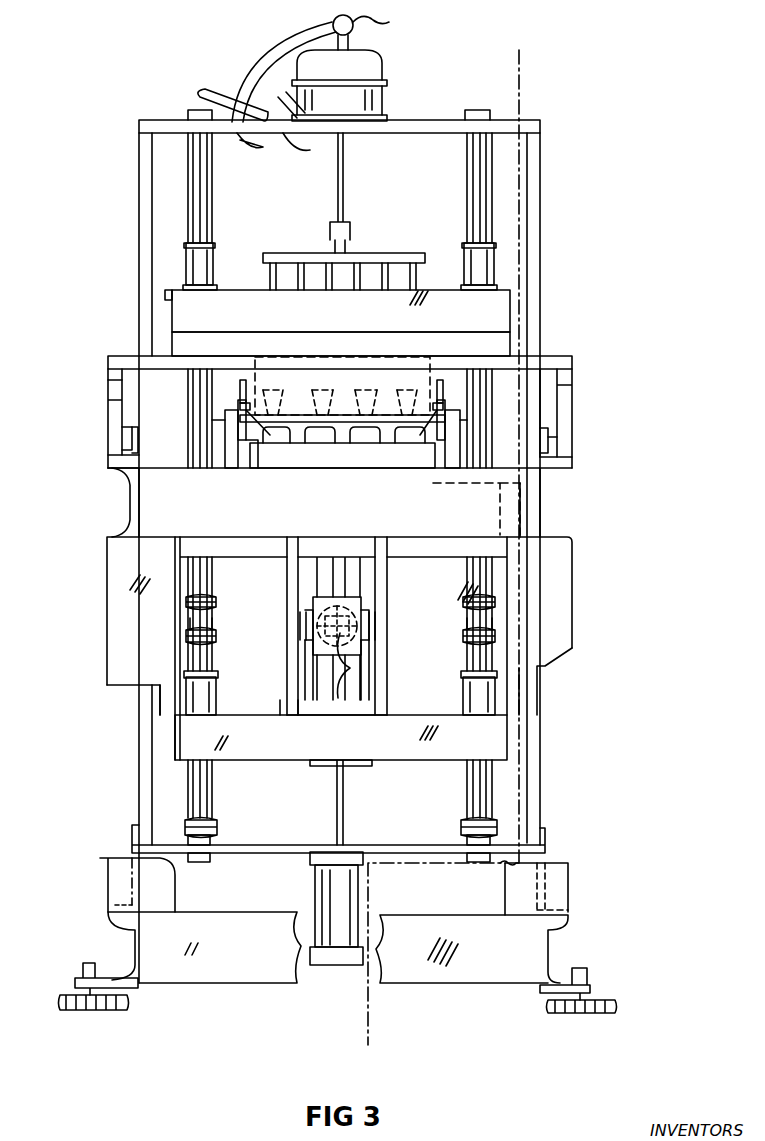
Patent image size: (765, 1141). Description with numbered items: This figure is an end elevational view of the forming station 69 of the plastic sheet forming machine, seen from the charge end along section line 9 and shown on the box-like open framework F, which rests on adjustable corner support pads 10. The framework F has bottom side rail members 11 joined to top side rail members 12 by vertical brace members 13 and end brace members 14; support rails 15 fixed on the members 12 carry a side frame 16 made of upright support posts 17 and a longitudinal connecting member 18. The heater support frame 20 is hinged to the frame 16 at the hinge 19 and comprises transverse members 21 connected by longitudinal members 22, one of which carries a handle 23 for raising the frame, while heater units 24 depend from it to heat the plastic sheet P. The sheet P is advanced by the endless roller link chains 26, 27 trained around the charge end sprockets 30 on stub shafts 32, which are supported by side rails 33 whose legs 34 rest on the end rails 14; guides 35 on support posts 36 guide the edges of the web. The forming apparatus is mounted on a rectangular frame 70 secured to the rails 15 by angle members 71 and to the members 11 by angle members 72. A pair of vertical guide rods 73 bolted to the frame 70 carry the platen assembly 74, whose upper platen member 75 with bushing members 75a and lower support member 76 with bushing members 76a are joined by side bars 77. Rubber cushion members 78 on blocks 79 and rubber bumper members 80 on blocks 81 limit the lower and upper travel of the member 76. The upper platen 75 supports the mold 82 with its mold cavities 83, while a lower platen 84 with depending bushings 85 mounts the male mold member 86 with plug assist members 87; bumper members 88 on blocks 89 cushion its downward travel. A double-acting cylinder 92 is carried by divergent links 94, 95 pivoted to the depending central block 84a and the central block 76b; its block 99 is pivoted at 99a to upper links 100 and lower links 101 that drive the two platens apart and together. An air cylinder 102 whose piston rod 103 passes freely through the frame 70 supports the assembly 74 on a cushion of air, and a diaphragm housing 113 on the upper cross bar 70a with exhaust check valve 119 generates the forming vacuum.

The section line 9- 9 is at (518, 50).
The corner support pads 10 is at (95, 1007).
The bottom side rail members 11 is at (135, 935).
The top side rail members 12 is at (128, 504).
The vertical brace members 13 is at (116, 647).
The end brace members 14 is at (139, 570).
The support rails 15 is at (111, 466).
The frame 16 is at (118, 440).
The upright support posts 17 is at (113, 420).
The longitudinal connecting member 18 is at (110, 382).
The hinge 19 is at (108, 365).
The heater support frame 20 is at (570, 360).
The transverse members 21 is at (498, 373).
The longitudinal members 22 is at (111, 355).
The handle 23 is at (569, 367).
The heater units 24 is at (416, 362).
The endless roller link chain 26 is at (250, 447).
The endless roller link chain 27 is at (414, 520).
The charge end sprockets 30 is at (255, 440).
The stub shafts 32 is at (242, 447).
The side rails 33 is at (215, 461).
The legs 34 is at (228, 467).
The guides 35 is at (246, 380).
The support posts 36 is at (246, 403).
The forming station 69 is at (545, 288).
The frame 70 is at (562, 292).
The upper cross bar 70a is at (399, 126).
The angle members 71 is at (125, 430).
The angle members 72 is at (130, 832).
The vertical guide rods 73 is at (207, 208).
The platen assembly 74 is at (513, 288).
The upper platen member 75 is at (240, 298).
The bushing members 75a is at (190, 254).
The lower support member 76 is at (277, 760).
The bushing members 76a is at (209, 692).
The central block 76b is at (374, 710).
The side bars 77 is at (165, 710).
The rubber cushion members 78 is at (218, 825).
The blocks 79 is at (210, 835).
The rubber bumper members 80 is at (216, 635).
The blocks 81 is at (213, 626).
The mold 82 is at (261, 370).
The mold cavities 83 is at (291, 387).
The lower platen 84 is at (266, 550).
The depending central block 84a is at (386, 558).
The depending bushings 85 is at (212, 577).
The male mold member 86 is at (397, 447).
The plug assist members 87 is at (371, 445).
The rubber bumper members 88 is at (186, 602).
The blocks 89 is at (186, 634).
The double-acting pressure fluid actuated cylinder 92 is at (360, 643).
The divergent link 94 is at (365, 594).
The divergent link 95 is at (365, 667).
The block 99 is at (350, 677).
The pivot 99a is at (375, 624).
The upper links 100 is at (354, 551).
The lower links 101 is at (311, 704).
The air cylinder 102 is at (322, 965).
The piston rod 103 is at (345, 814).
The diaphragm housing 113 is at (370, 65).
The exhaust check valve 119 is at (354, 23).
The plastic sheet P is at (348, 443).
The framework F is at (575, 580).